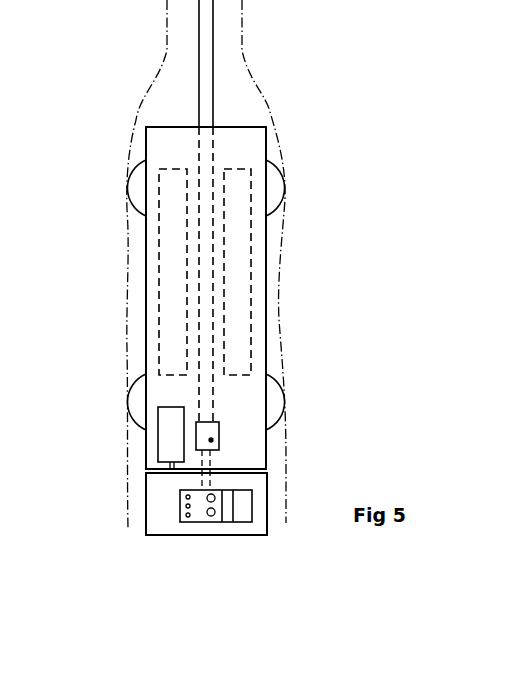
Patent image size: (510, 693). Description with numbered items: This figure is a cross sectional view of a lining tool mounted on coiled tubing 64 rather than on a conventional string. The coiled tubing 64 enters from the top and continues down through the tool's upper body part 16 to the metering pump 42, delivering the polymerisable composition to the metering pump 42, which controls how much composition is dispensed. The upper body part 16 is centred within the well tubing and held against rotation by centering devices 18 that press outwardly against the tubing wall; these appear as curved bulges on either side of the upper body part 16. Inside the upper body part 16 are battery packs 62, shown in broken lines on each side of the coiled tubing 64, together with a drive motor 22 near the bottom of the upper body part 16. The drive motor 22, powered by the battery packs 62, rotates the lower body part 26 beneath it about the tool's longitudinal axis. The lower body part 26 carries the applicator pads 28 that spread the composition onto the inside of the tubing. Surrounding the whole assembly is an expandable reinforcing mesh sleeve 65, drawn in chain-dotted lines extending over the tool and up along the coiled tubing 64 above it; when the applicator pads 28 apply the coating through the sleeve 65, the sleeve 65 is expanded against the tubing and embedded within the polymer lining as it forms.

The upper body part 16 is at (266, 248).
The centering devices 18 is at (267, 190).
The drive motor 22 is at (175, 437).
The lower body part 26 is at (165, 523).
The applicator pads 28 is at (243, 513).
The metering pump 42 is at (219, 440).
The battery packs 62 is at (175, 285).
The coiled tubing 64 is at (209, 60).
The expandable reinforcing mesh sleeve 65 is at (270, 107).